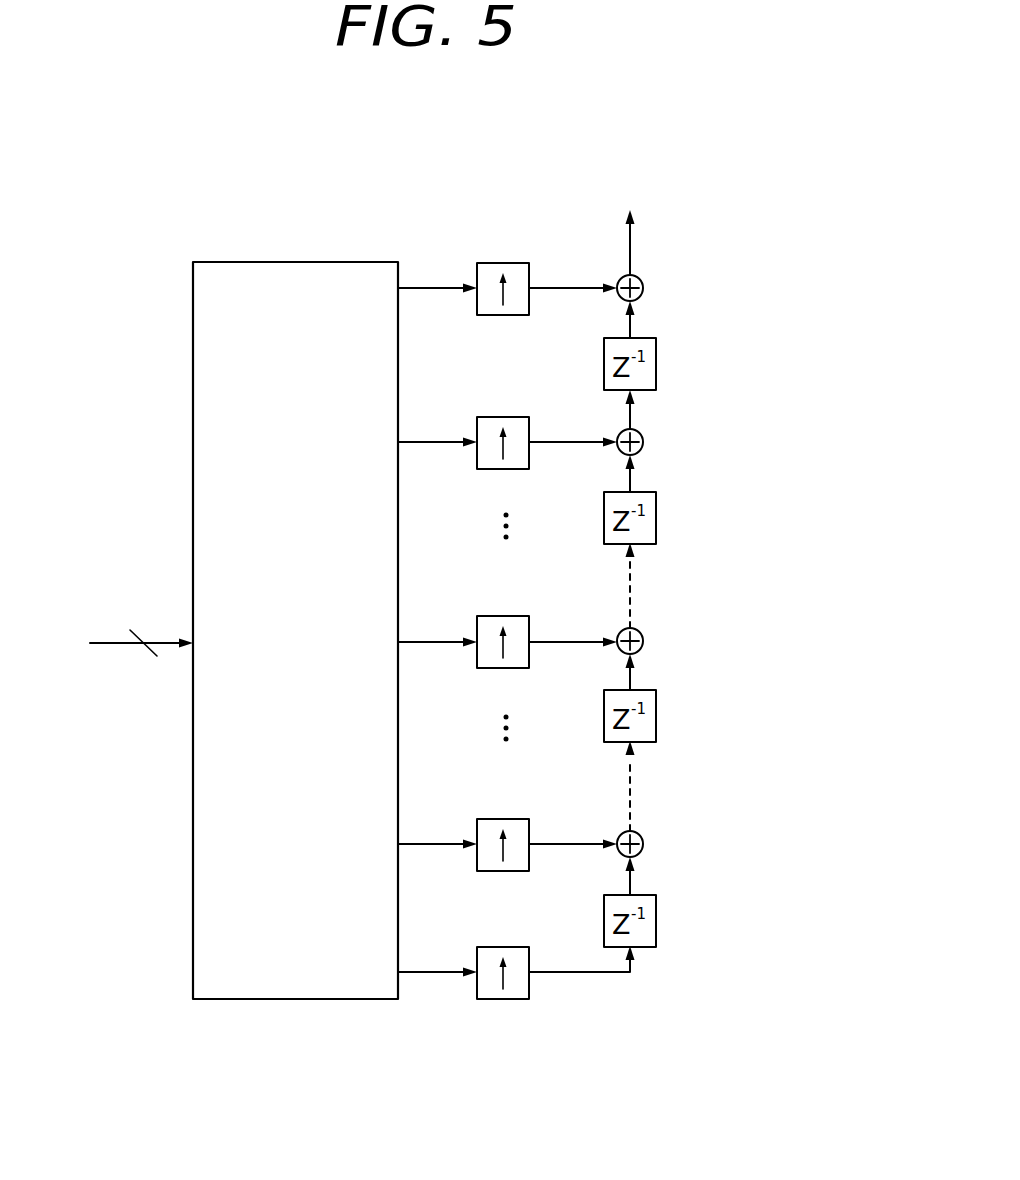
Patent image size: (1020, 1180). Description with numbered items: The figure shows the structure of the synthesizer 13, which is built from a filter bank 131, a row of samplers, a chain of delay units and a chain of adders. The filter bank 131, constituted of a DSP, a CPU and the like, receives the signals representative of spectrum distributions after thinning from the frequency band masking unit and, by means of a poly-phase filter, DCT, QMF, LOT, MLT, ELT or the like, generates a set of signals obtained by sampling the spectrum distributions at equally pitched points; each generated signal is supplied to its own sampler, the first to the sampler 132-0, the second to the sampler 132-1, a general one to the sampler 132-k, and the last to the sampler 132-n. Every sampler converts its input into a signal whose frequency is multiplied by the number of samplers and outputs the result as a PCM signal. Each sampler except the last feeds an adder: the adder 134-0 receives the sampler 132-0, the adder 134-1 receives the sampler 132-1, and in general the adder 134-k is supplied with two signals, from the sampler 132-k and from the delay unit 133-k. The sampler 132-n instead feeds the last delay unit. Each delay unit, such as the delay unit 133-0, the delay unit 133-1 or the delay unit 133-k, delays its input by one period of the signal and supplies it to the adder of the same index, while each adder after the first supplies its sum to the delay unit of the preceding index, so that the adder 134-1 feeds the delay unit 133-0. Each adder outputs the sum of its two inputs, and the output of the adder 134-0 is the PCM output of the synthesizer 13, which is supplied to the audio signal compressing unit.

The synthesizer 13 is at (303, 168).
The filter bank 131 is at (193, 410).
The sampler 132-0 is at (478, 263).
The sampler 132-1 is at (515, 469).
The sampler 132-k is at (488, 616).
The sampler 132-n is at (510, 999).
The delay unit 133-0 is at (656, 362).
The delay unit 133-1 is at (656, 517).
The delay unit 133-k is at (656, 712).
The adder 134-0 is at (670, 262).
The adder 134-1 is at (693, 418).
The adder 134-k is at (680, 615).